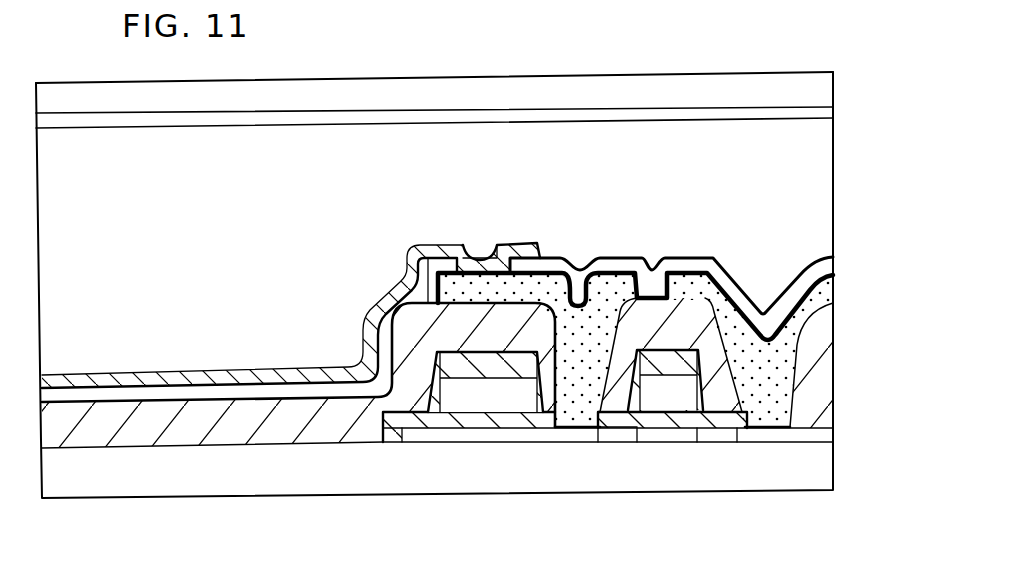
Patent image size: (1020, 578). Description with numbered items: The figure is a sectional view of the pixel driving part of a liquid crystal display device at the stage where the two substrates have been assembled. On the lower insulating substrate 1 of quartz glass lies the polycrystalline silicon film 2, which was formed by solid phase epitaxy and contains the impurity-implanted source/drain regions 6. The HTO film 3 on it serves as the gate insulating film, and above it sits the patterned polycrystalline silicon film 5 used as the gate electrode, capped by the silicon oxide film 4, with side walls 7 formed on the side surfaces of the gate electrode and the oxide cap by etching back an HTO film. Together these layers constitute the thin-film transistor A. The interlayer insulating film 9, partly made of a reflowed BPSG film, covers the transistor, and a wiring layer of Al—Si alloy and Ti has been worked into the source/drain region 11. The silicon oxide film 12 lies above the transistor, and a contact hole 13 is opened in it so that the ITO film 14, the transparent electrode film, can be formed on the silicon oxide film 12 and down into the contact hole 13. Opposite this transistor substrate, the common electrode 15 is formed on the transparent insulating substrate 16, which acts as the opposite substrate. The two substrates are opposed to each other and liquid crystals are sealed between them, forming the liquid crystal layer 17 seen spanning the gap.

The insulating substrate 1 is at (785, 490).
The polycrystalline silicon film 2 is at (668, 437).
The HTO film 3 is at (692, 422).
The silicon oxide film 4 is at (650, 393).
The polycrystalline silicon film 5 is at (695, 350).
The source/drain regions 6 is at (630, 440).
The side walls 7 is at (620, 305).
The interlayer insulating film 9 is at (427, 310).
The source/drain region 11 is at (552, 283).
The silicon oxide film 12 is at (403, 303).
The contact hole 13 is at (470, 260).
The ITO film 14 is at (367, 323).
The common electrode 15 is at (825, 111).
The transparent insulating substrate 16 is at (822, 90).
The liquid crystal layer 17 is at (820, 164).
The thin-film transistor A is at (628, 430).